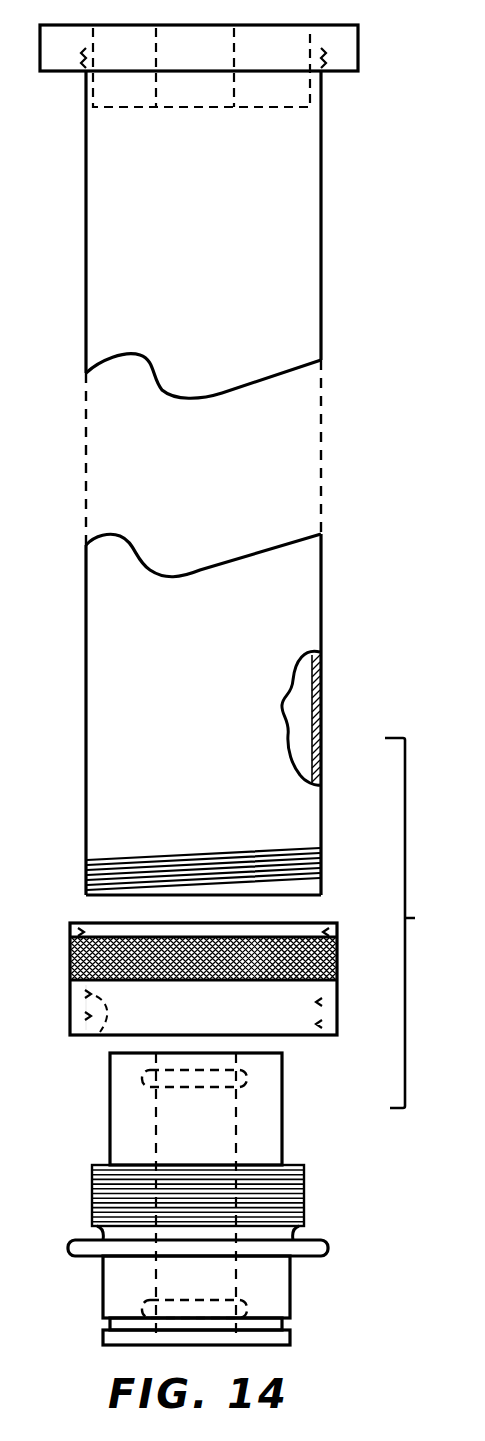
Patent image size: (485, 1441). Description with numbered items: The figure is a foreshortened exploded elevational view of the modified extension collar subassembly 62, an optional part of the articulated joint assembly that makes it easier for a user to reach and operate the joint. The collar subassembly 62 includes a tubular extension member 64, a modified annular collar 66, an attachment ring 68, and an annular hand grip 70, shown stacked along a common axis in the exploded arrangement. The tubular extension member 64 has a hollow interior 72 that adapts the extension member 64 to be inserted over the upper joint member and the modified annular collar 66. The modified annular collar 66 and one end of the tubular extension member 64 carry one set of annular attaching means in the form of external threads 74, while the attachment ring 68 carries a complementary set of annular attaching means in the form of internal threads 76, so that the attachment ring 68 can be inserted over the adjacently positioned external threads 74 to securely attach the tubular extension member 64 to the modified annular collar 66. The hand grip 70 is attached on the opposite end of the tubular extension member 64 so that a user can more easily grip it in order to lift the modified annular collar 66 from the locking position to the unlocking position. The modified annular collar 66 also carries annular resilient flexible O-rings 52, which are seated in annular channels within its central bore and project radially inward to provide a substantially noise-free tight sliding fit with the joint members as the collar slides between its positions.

The annular hand grip 70 is at (363, 46).
The modified extension collar subassembly 62 is at (333, 251).
The tubular extension member 64 is at (322, 328).
The hollow interior 72 is at (302, 714).
The attachment ring 68 is at (70, 955).
The external threads 74 is at (263, 1190).
The internal threads 76 is at (86, 1040).
The modified annular collar 66 is at (286, 1155).
The O-rings 52 is at (180, 1090).